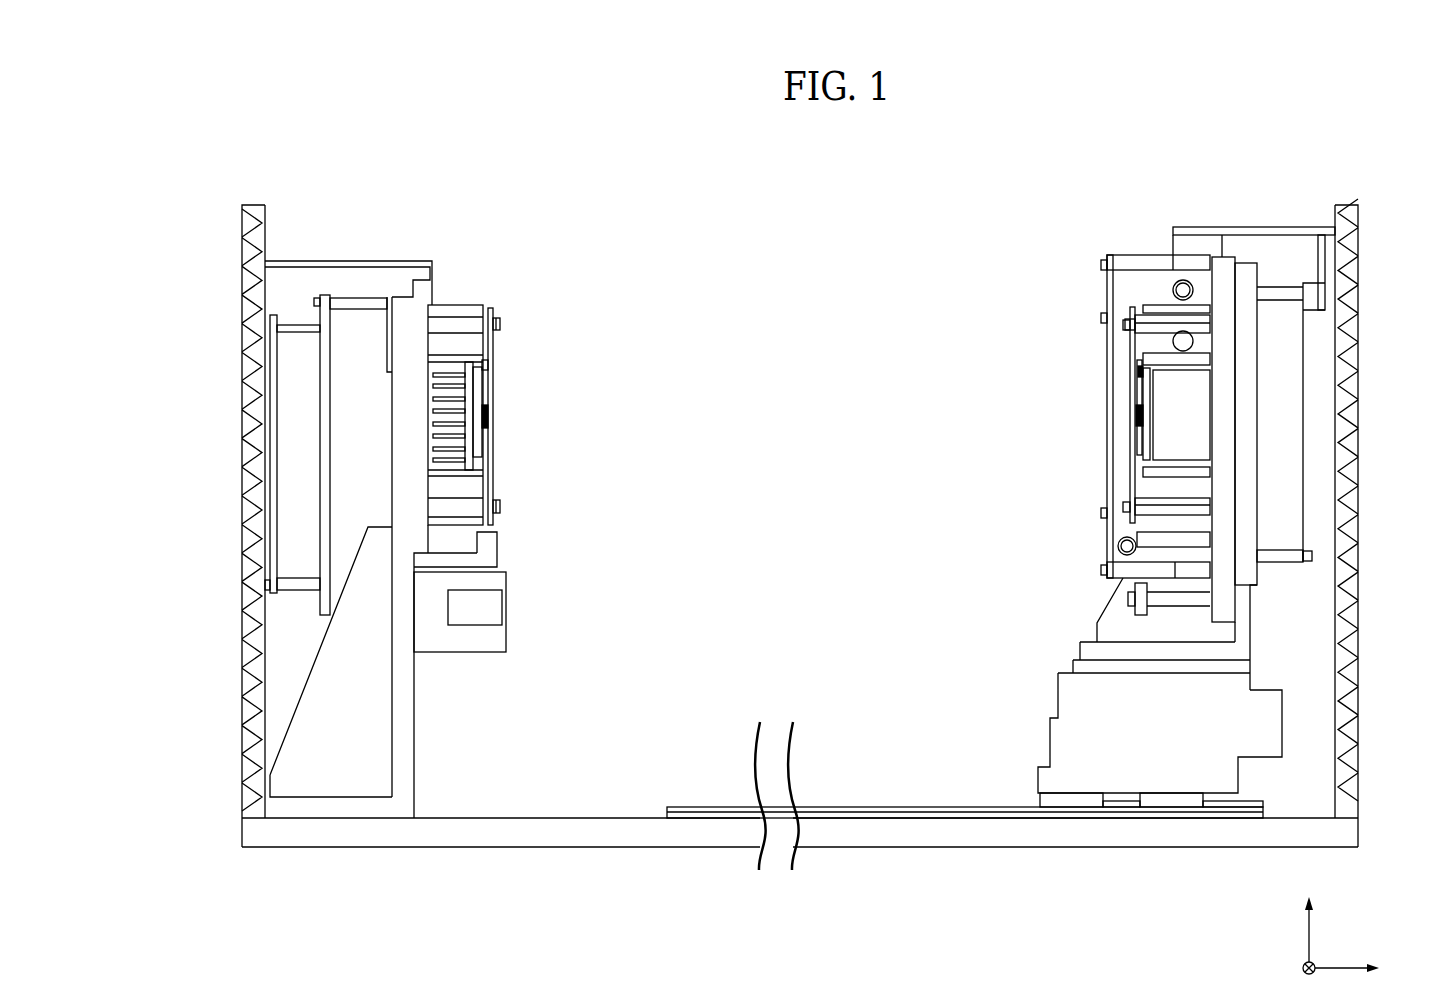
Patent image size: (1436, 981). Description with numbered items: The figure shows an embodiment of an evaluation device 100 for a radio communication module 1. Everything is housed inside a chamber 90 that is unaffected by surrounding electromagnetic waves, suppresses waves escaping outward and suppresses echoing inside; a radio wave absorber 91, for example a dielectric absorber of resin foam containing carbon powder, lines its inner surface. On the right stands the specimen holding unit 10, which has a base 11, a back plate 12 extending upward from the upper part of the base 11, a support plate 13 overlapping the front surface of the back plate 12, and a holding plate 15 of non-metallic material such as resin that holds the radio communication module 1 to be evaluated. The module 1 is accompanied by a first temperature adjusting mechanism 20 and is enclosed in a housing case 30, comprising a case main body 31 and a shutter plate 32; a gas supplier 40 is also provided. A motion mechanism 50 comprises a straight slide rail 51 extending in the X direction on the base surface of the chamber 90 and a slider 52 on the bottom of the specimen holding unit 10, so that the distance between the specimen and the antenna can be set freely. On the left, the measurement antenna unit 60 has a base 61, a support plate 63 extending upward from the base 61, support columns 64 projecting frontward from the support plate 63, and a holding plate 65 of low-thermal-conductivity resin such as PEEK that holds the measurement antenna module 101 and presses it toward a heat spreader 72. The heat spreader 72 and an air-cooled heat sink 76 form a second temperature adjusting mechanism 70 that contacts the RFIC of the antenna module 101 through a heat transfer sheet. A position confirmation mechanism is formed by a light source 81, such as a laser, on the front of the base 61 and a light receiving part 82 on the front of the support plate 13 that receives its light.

The radio communication module 1 is at (1138, 380).
The specimen holding unit 10 is at (1304, 199).
The base 11 is at (1105, 725).
The back plate 12 is at (1248, 350).
The support plate 13 is at (1228, 262).
The holding plate 15 is at (1132, 480).
The first temperature adjusting mechanism 20 is at (1225, 420).
The housing case 30 is at (1000, 254).
The case main body 31 is at (1127, 262).
The shutter plate 32 is at (1108, 338).
The gas supplier 40 is at (1104, 545).
The motion mechanism 50 is at (955, 770).
The slide rail 51 is at (862, 805).
The slider 52 is at (1165, 803).
The measurement antenna unit 60 is at (497, 282).
The base 61 is at (300, 743).
The support plate 63 is at (406, 404).
The support columns 64 is at (470, 320).
The holding plate 65 is at (485, 473).
The second temperature adjusting mechanism 70 is at (482, 430).
The heat spreader 72 is at (476, 441).
The heat sink 76 is at (440, 443).
The light source 81 is at (487, 605).
The light receiving part 82 is at (1127, 598).
The chamber 90 is at (233, 675).
The radio wave absorber 91 is at (250, 614).
The evaluation device 100 is at (827, 254).
The measurement antenna module 101 is at (489, 378).